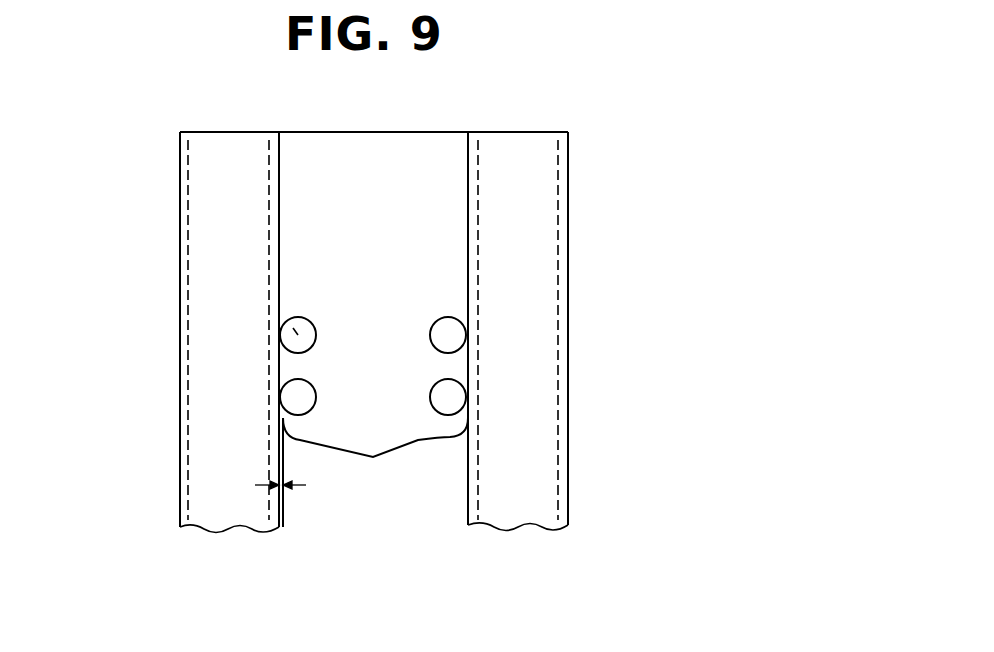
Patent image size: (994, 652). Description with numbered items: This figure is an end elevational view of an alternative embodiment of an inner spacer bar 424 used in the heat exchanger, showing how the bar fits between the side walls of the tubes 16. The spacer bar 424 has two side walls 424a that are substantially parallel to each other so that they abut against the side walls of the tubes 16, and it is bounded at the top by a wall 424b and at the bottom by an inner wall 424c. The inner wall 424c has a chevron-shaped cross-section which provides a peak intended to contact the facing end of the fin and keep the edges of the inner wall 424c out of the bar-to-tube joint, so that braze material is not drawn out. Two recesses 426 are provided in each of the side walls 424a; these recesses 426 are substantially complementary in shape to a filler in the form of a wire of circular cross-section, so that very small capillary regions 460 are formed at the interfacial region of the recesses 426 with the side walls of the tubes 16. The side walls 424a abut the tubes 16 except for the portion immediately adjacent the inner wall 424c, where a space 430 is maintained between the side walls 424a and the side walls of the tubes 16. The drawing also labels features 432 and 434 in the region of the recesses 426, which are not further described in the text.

The tube 16 is at (513, 172).
The spacer bar 424 is at (400, 228).
The side wall 424a is at (279, 218).
The top wall 424b is at (416, 131).
The inner wall 424c is at (417, 440).
The recess 426 is at (290, 379).
The space 430 is at (281, 490).
The slots 432 is at (293, 328).
The roller axle 434 is at (282, 345).
The capillary region 460 is at (463, 412).